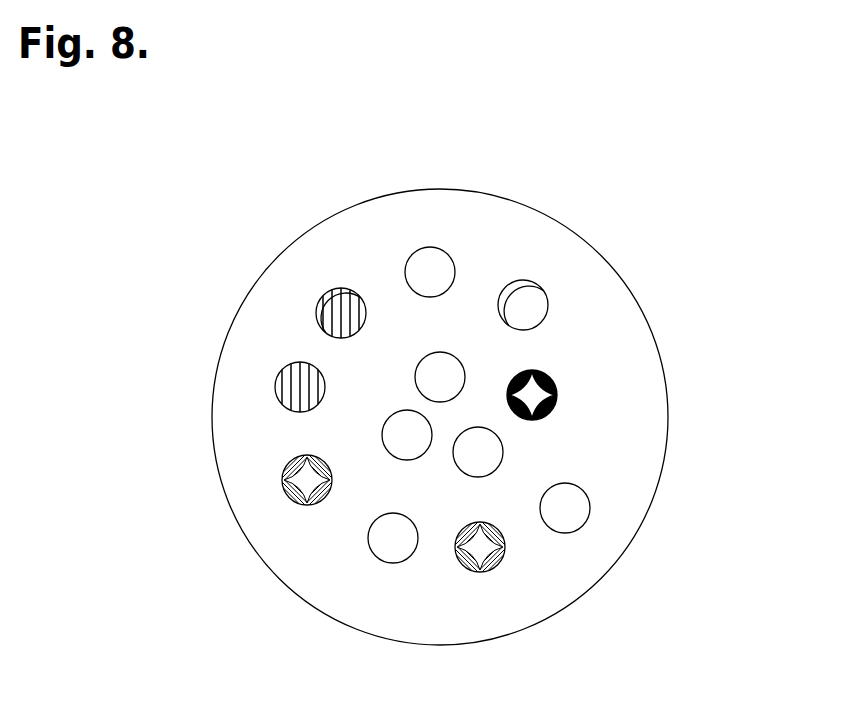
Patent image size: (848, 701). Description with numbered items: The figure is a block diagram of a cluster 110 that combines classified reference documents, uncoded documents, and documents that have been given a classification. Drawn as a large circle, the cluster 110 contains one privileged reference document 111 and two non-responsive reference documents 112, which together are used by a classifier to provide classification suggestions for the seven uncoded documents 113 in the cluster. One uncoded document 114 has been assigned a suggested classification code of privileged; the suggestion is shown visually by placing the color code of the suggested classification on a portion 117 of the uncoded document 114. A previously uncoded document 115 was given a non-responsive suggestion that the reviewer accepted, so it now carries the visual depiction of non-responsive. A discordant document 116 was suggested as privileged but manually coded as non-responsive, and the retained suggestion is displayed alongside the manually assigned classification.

The cluster 110 is at (445, 189).
The privileged reference document 111 is at (557, 397).
The non-responsive reference documents 112 is at (282, 480).
The uncoded documents 113 is at (590, 508).
The uncoded document with privileged code suggestion 114 is at (548, 305).
The previously uncoded document with accepted non-responsive code suggestion 115 is at (275, 387).
The discordant document 116 is at (317, 318).
The portion of the uncoded document 117 is at (527, 279).